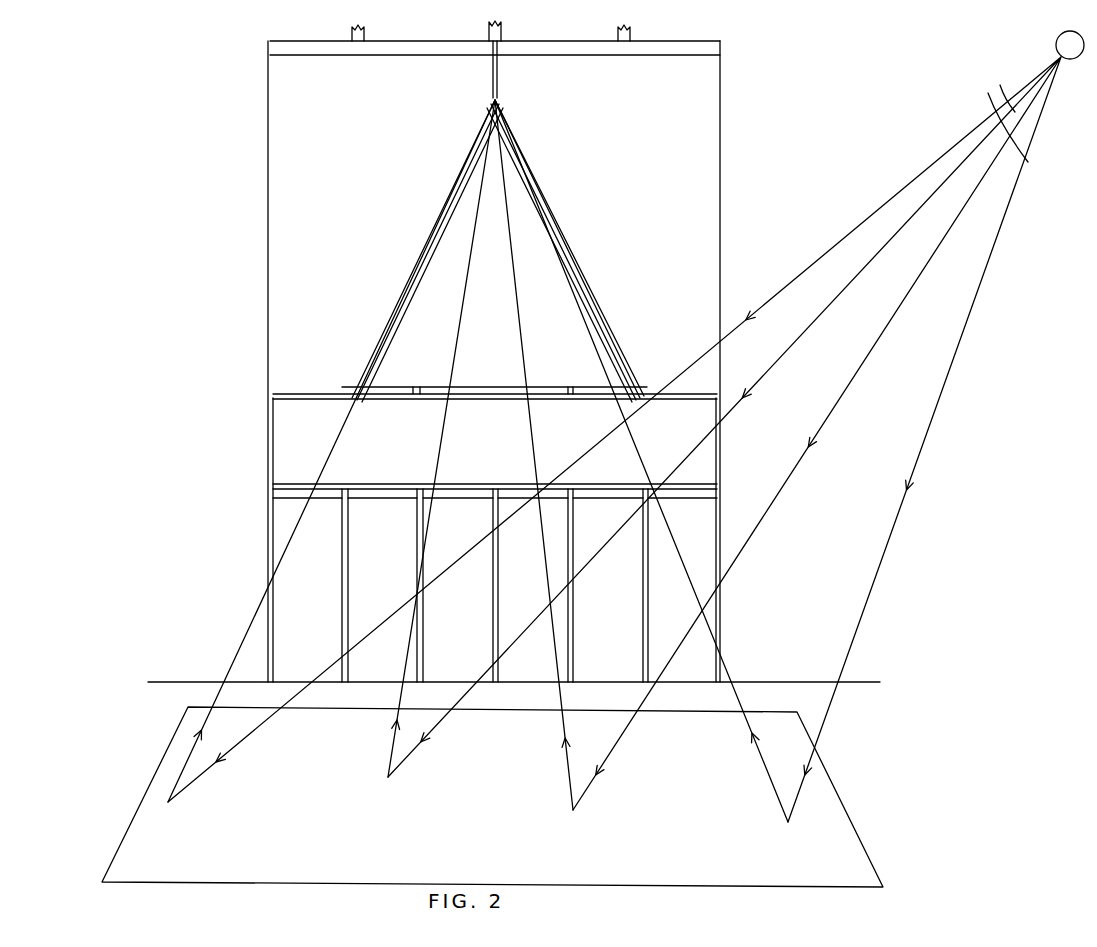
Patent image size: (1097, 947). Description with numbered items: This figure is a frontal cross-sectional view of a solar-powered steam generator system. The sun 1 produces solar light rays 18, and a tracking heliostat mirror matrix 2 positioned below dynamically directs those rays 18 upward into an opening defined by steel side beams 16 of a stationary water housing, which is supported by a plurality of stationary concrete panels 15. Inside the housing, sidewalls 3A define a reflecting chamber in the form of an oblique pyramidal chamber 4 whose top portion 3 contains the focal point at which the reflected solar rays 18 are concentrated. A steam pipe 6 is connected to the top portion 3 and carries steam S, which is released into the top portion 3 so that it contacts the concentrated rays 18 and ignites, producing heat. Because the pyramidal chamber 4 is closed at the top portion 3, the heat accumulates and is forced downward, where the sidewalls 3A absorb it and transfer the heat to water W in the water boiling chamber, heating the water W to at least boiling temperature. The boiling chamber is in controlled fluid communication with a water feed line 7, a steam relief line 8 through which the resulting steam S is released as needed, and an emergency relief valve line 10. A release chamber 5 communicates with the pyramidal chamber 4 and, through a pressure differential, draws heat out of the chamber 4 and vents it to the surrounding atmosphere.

The sun 1 is at (1055, 43).
The solar light rays 18 is at (1022, 95).
The tracking heliostat mirror matrix 2 is at (836, 812).
The steam S is at (285, 46).
The emergency relief valve line 10 is at (358, 39).
The water W is at (318, 102).
The water feed line 7 is at (627, 42).
The steam relief line 8 is at (500, 41).
The steam pipe 6 is at (498, 77).
The top portion 3 is at (505, 105).
The sidewalls 3A is at (577, 390).
The oblique pyramidal chamber 4 is at (470, 340).
The release chamber 5 is at (375, 395).
The steel side beams 16 is at (352, 499).
The stationary concrete panels 15 is at (293, 445).